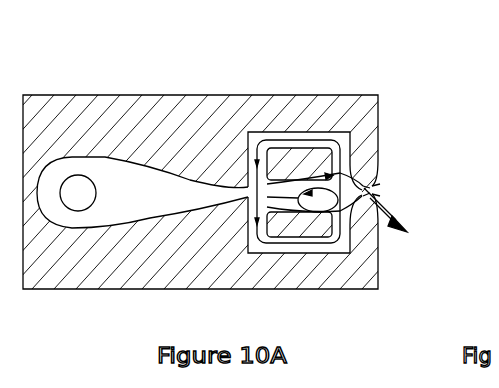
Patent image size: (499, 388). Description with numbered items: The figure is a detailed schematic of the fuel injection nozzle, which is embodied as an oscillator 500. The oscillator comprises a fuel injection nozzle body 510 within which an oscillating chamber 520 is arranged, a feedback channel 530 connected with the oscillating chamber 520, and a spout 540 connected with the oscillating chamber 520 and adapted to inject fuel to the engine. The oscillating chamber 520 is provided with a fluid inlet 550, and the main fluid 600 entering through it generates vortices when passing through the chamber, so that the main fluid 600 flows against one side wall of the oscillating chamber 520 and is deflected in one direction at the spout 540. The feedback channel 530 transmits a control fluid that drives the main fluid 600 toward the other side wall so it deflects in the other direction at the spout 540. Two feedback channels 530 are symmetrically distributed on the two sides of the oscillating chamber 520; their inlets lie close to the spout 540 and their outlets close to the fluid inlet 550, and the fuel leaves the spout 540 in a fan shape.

The oscillator 500 is at (249, 156).
The fuel injection nozzle body 510 is at (250, 128).
The oscillating chamber 520 is at (360, 181).
The feedback channel 530 is at (322, 133).
The spout 540 is at (364, 187).
The fluid inlet 550 is at (177, 173).
The main fluid 600 is at (404, 229).